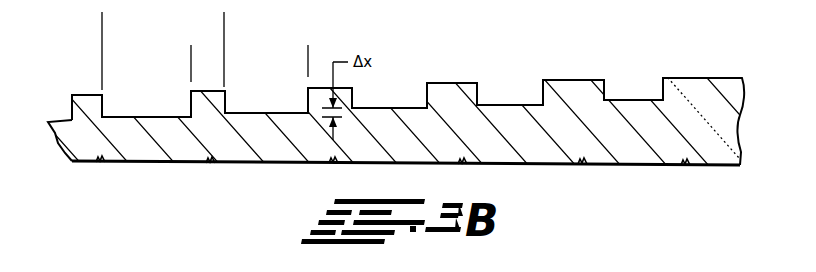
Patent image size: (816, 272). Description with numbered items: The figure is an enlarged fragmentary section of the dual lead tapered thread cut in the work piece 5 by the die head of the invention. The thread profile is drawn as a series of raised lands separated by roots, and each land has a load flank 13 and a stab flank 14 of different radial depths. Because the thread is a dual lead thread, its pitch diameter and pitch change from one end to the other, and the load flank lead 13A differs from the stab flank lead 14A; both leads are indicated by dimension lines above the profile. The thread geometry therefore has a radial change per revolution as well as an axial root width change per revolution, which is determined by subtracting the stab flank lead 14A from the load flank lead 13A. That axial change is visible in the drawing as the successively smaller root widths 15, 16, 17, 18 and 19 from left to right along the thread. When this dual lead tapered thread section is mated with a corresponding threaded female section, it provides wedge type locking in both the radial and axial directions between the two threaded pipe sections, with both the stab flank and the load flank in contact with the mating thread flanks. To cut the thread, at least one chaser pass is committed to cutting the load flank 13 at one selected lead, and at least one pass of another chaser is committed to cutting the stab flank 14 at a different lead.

The substrate 5 is at (730, 123).
The load flank 13 is at (103, 102).
The stab flank 14 is at (190, 101).
The root width 15 is at (157, 118).
The root width 16 is at (284, 116).
The root width 17 is at (410, 110).
The root width 18 is at (505, 107).
The root width 19 is at (640, 102).
The load flank lead 13A is at (224, 22).
The stab flank lead 14A is at (308, 51).